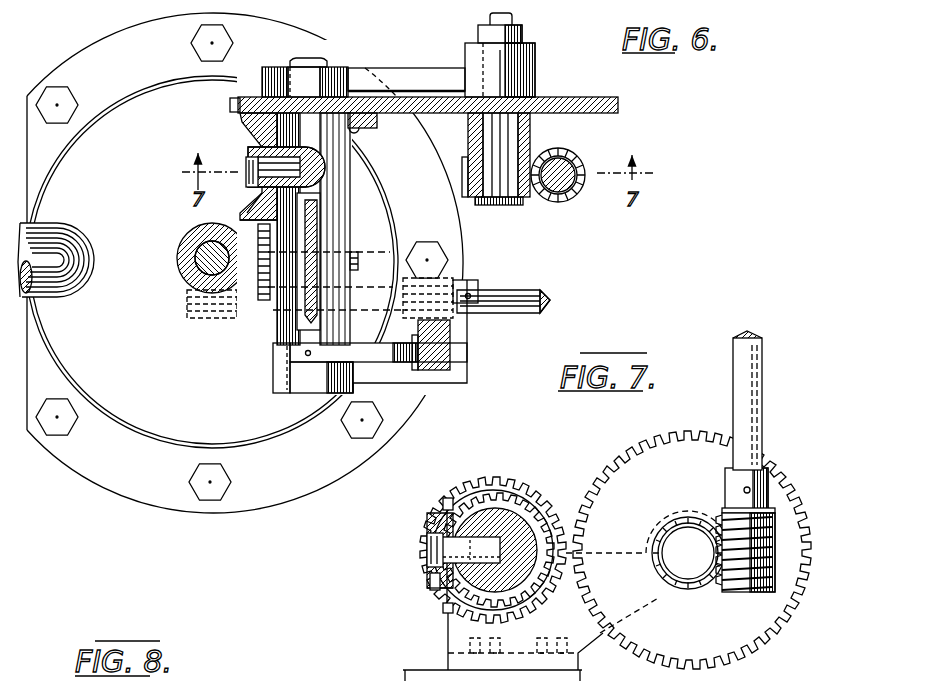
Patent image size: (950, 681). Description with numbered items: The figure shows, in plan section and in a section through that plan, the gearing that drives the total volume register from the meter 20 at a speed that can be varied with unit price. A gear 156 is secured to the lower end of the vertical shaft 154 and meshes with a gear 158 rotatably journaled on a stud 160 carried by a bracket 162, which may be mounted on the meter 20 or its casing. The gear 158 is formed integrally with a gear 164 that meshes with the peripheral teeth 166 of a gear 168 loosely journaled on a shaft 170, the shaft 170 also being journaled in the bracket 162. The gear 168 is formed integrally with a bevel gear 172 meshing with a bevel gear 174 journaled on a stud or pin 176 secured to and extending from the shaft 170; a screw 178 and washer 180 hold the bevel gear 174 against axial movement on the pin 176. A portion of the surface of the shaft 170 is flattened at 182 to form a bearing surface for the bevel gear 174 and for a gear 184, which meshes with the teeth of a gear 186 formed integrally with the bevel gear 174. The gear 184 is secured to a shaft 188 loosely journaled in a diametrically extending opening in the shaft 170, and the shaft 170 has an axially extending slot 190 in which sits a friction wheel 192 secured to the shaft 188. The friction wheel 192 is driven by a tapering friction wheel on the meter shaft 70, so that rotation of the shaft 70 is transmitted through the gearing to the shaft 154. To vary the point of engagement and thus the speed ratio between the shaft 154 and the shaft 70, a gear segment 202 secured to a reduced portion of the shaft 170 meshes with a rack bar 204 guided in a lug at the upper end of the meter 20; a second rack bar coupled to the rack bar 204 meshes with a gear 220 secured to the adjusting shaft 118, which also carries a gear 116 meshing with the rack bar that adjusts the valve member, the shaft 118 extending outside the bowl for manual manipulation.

In FIG. 6, the meter 20 is at (128, 472).
In FIG. 6, the meter shaft 70 is at (200, 257).
In FIG. 6, the gear 116 is at (187, 303).
In FIG. 6, the adjusting shaft 118 is at (523, 297).
In FIG. 6, the vertical shaft 154 is at (572, 197).
In FIG. 7, the vertical shaft 154 is at (757, 358).
In FIG. 6, the gear 156 is at (552, 197).
In FIG. 7, the gear 156 is at (745, 582).
In FIG. 6, the gear 158 is at (462, 197).
In FIG. 7, the gear 158 is at (672, 587).
In FIG. 6, the stud 160 is at (500, 128).
In FIG. 7, the stud 160 is at (683, 543).
In FIG. 6, the bracket 162 is at (403, 85).
In FIG. 7, the bracket 162 is at (457, 636).
In FIG. 6, the gear 164 is at (617, 107).
In FIG. 7, the gear 164 is at (630, 447).
In FIG. 6, the peripheral teeth 166 is at (233, 105).
In FIG. 7, the peripheral teeth 166 is at (463, 488).
In FIG. 6, the gear 168 is at (362, 100).
In FIG. 7, the gear 168 is at (530, 487).
In FIG. 6, the shaft 170 is at (282, 332).
In FIG. 7, the shaft 170 is at (493, 523).
In FIG. 6, the bevel gear 172 is at (373, 122).
In FIG. 6, the bevel gear 174 is at (247, 136).
In FIG. 7, the bevel gear 174 is at (430, 515).
In FIG. 6, the stud or pin 176 is at (300, 170).
In FIG. 7, the stud or pin 176 is at (460, 545).
In FIG. 6, the screw 178 is at (248, 168).
In FIG. 6, the washer 180 is at (257, 190).
In FIG. 7, the flattened surface portion 182 is at (430, 573).
In FIG. 6, the gear 184 is at (257, 300).
In FIG. 6, the gear 186 is at (243, 220).
In FIG. 7, the gear 186 is at (440, 597).
In FIG. 6, the shaft 188 is at (355, 253).
In FIG. 6, the axially extending slot 190 is at (317, 200).
In FIG. 6, the friction wheel 192 is at (317, 230).
In FIG. 6, the gear segment 202 is at (365, 352).
In FIG. 6, the rack bar 204 is at (433, 345).
In FIG. 6, the gear 220 is at (462, 267).